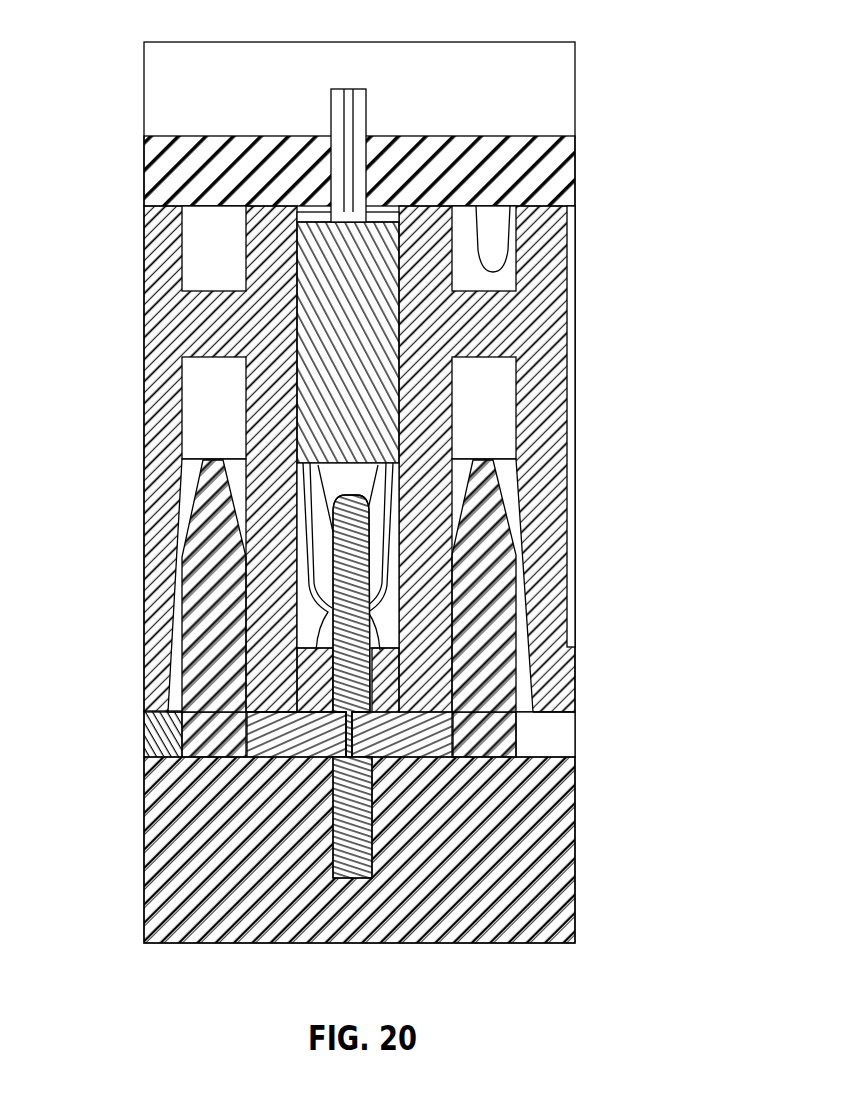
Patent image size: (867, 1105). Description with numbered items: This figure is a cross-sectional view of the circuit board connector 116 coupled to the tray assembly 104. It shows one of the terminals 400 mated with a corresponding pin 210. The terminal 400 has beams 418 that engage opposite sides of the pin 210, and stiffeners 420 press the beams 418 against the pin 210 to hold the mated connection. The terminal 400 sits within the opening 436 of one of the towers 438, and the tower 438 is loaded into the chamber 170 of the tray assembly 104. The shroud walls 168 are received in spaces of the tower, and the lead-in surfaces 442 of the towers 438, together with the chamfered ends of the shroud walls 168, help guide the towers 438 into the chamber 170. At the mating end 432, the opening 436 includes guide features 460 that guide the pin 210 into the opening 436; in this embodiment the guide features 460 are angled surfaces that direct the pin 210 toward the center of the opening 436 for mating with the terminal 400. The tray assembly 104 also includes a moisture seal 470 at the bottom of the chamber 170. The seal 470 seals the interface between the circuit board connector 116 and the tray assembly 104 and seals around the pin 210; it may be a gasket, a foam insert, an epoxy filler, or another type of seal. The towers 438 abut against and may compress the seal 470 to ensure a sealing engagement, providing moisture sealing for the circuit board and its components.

The tray assembly 104 is at (590, 840).
The circuit board connector 116 is at (618, 110).
The shroud walls 168 is at (500, 667).
The chamber 170 is at (444, 692).
The pin 210 is at (375, 825).
The terminal 400 is at (375, 260).
The beams 418 is at (378, 560).
The stiffeners 420 is at (368, 600).
The mating end 432 is at (315, 757).
The opening 436 is at (317, 202).
The tower 438 is at (273, 597).
The lead-in surfaces 442 is at (267, 663).
The guide features 460 is at (278, 724).
The moisture seal 470 is at (420, 733).